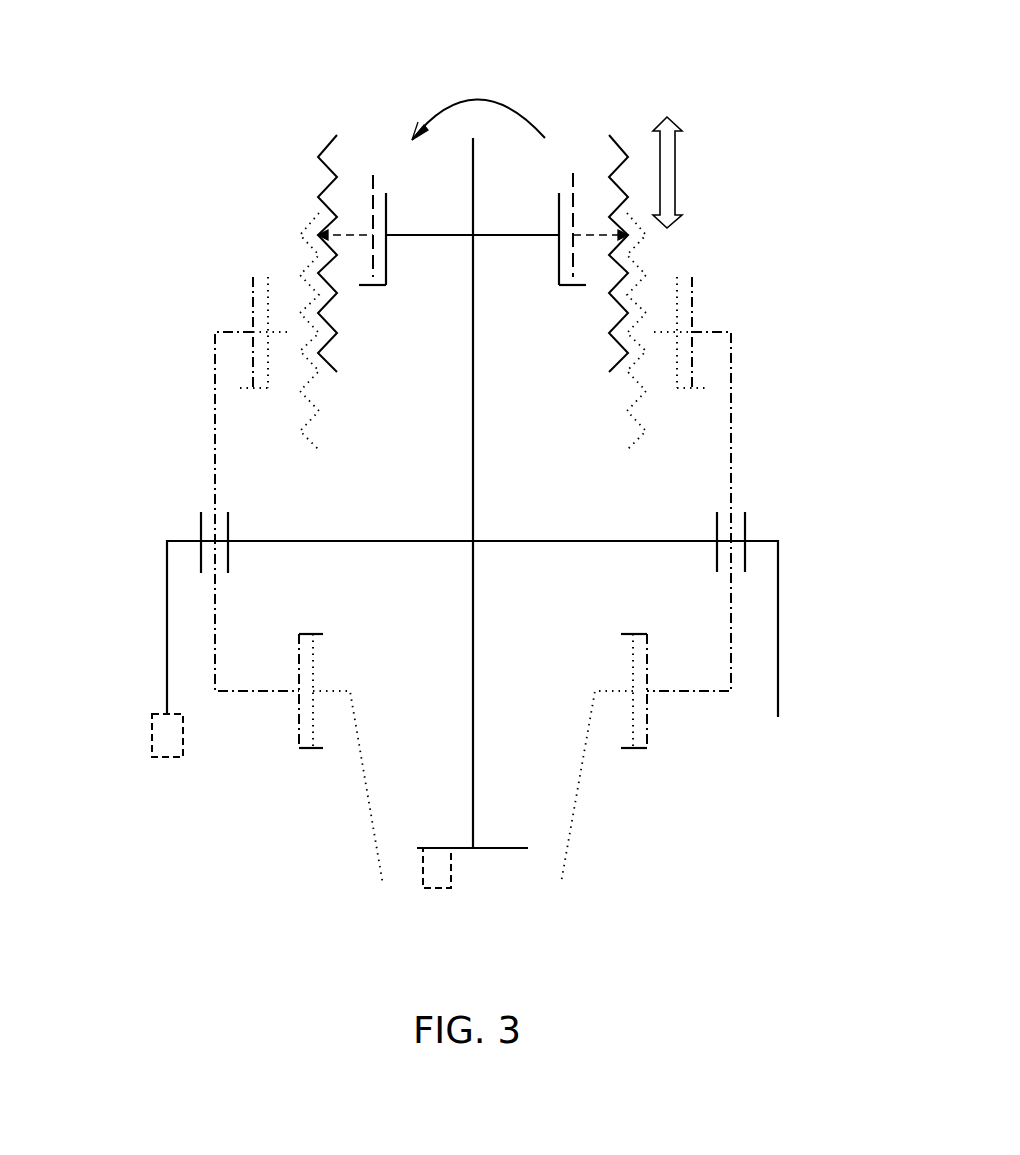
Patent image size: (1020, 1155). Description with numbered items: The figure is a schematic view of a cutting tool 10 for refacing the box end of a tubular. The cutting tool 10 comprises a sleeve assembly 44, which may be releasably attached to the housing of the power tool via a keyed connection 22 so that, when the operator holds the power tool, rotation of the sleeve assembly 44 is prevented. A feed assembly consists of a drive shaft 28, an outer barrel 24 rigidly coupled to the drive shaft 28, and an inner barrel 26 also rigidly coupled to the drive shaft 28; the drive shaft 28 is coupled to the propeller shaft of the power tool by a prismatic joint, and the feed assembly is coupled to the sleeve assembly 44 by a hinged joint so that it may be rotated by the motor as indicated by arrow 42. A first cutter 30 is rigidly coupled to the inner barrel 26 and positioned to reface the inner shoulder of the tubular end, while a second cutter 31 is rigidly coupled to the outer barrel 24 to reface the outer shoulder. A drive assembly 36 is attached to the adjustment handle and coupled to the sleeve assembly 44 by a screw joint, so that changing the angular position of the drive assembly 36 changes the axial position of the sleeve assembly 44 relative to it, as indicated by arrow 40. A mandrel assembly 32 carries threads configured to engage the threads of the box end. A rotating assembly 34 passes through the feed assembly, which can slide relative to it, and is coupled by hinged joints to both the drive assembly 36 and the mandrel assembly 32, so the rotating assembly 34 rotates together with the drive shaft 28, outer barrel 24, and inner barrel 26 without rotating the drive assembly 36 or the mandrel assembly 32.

The cutting tool 10 is at (173, 98).
The keyed connection 22 is at (373, 180).
The outer barrel 24 is at (778, 662).
The inner barrel 26 is at (500, 848).
The drive shaft 28 is at (473, 203).
The first cutter 30 is at (437, 888).
The second cutter 31 is at (152, 727).
The mandrel assembly 32 is at (577, 793).
The rotating assembly 34 is at (215, 455).
The drive assembly 36 is at (288, 332).
The arrow 40 is at (673, 172).
The arrow 42 is at (475, 102).
The sleeve assembly 44 is at (372, 202).